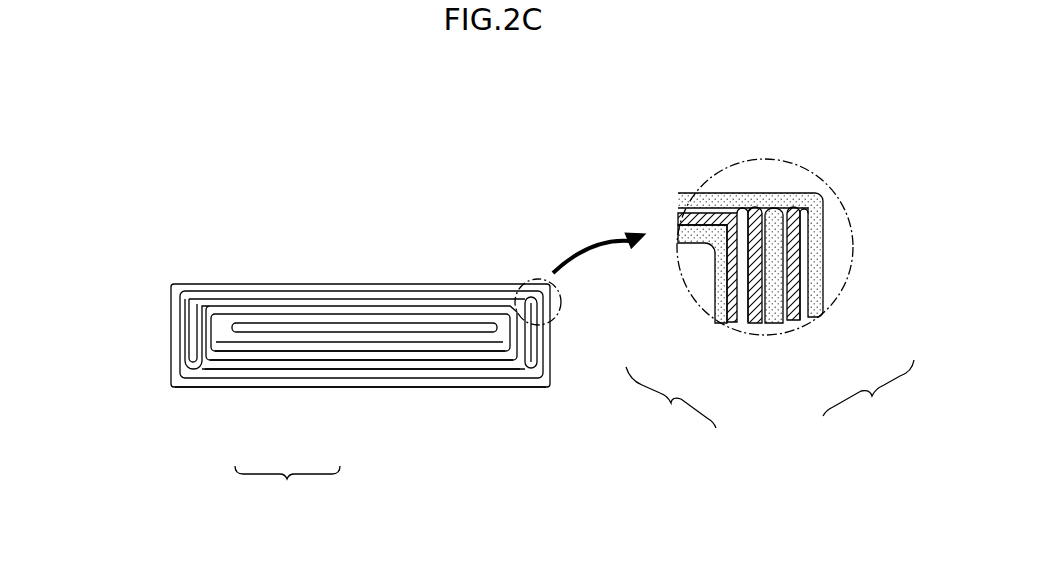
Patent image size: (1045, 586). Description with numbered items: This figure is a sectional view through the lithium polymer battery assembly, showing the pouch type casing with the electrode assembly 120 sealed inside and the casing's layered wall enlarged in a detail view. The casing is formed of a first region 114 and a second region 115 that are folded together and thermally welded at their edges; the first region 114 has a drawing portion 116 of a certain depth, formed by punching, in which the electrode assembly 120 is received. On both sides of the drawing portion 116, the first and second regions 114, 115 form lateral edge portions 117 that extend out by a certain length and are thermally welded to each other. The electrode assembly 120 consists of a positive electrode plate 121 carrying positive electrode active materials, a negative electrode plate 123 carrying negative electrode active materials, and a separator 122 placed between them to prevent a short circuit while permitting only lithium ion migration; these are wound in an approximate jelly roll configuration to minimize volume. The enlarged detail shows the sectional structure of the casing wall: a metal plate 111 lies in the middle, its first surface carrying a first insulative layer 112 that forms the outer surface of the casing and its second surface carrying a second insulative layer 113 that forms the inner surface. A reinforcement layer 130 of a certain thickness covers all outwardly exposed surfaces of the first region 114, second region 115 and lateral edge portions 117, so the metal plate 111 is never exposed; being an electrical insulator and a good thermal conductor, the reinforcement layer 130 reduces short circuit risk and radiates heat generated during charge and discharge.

The metal plate 111 is at (743, 323).
The first insulative layer 112 is at (730, 323).
The second insulative layer 113 is at (767, 330).
The first region 114 is at (356, 292).
The second region 115 is at (437, 383).
The drawing portion 116 is at (290, 298).
The lateral edge portions 117 is at (171, 336).
The electrode assembly 120 is at (287, 483).
The positive electrode plate 121 is at (346, 367).
The separator 122 is at (290, 359).
The negative electrode plate 123 is at (235, 352).
The reinforcement layer 130 is at (415, 284).